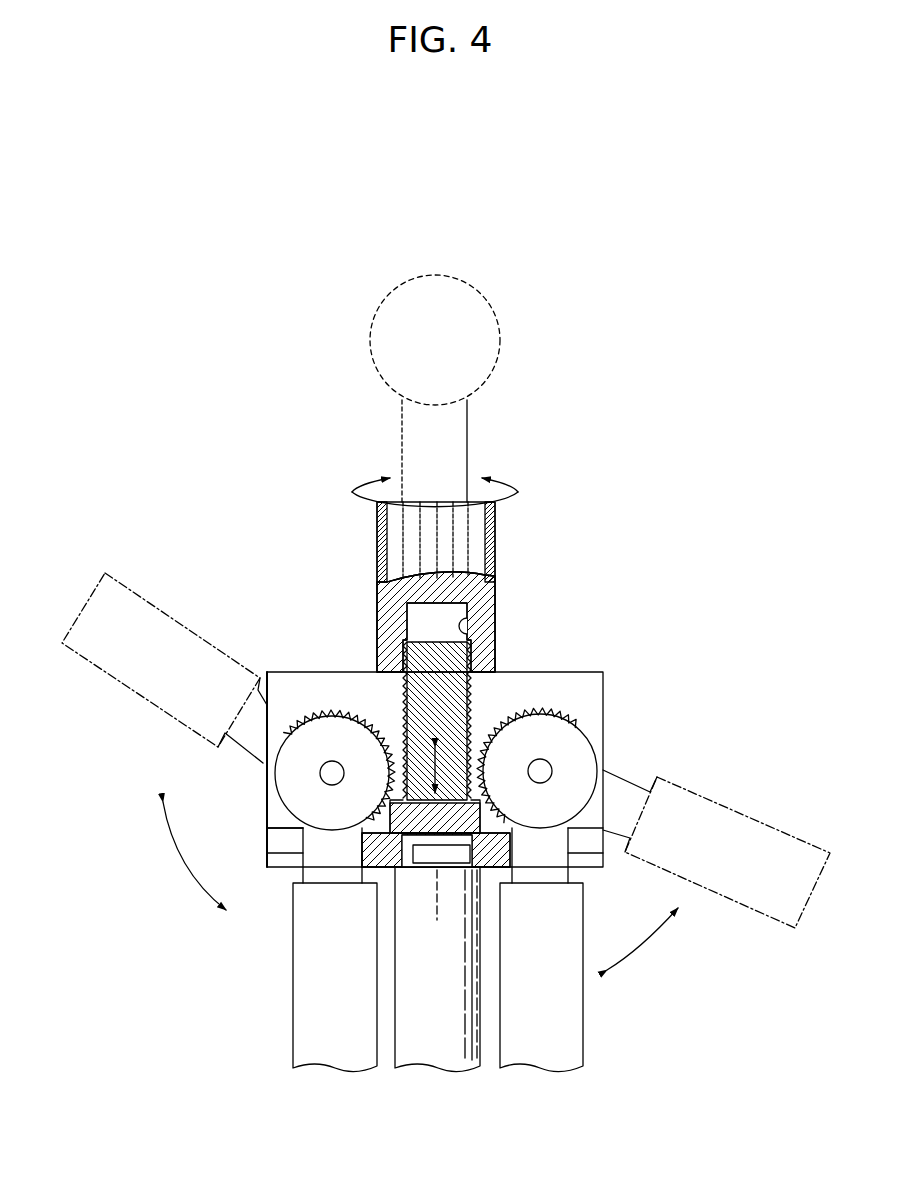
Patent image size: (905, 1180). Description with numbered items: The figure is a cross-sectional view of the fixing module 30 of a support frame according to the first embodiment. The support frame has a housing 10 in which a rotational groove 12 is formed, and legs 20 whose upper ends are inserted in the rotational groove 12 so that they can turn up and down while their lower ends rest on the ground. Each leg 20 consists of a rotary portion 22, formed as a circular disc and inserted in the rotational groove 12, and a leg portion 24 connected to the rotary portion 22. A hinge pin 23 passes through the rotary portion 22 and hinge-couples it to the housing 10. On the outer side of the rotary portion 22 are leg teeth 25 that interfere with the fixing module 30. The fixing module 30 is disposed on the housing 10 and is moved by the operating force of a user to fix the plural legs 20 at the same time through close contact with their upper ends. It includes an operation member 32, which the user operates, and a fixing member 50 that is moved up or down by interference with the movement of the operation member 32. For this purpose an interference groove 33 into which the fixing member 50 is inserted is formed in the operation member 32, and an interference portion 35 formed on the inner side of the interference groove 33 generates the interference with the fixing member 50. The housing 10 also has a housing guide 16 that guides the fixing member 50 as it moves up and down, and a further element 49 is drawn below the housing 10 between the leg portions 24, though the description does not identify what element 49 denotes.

The housing 10 is at (315, 668).
The rotational groove 12 is at (293, 693).
The housing guide 16 is at (390, 867).
The leg 20 is at (735, 800).
The rotary portion 22 is at (573, 735).
The hinge pin 23 is at (552, 771).
The leg portion 24 is at (575, 1012).
The leg teeth 25 is at (551, 713).
The fixing module 30 is at (530, 582).
The operation member 32 is at (495, 547).
The interference groove 33 is at (425, 633).
The interference portion 35 is at (478, 617).
The center post 49 is at (437, 1060).
The fixing member 50 is at (292, 828).